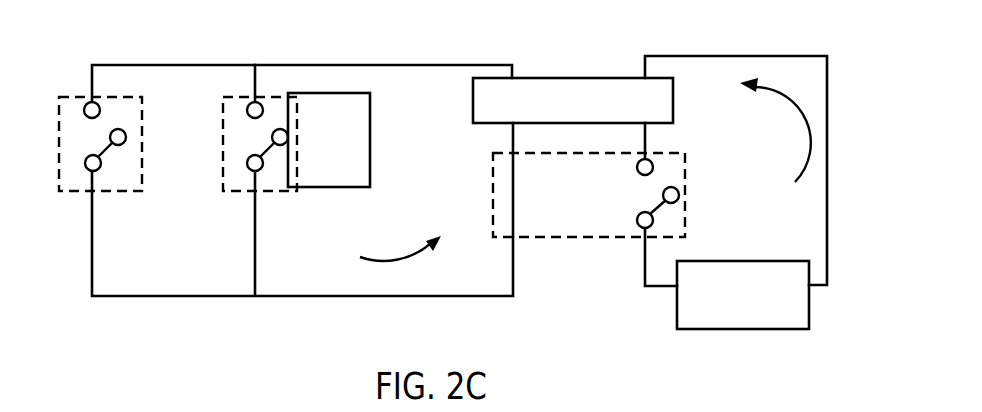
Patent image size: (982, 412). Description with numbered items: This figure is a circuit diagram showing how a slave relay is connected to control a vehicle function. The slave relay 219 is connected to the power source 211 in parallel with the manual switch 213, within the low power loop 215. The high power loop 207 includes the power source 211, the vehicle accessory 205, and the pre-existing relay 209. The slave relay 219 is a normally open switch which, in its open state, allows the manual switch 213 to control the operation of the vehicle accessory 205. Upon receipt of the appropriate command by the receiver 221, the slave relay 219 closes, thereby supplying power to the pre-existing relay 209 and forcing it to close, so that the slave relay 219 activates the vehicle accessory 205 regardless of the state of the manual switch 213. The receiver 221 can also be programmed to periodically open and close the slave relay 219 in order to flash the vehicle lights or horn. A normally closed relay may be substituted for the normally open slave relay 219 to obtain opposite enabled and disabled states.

The vehicle accessory 205 is at (693, 330).
The high power loop 207 is at (767, 82).
The pre-existing relay 209 is at (572, 238).
The power source 211 is at (570, 74).
The manual switch 213 is at (130, 192).
The low power loop 215 is at (398, 260).
The slave relay 219 is at (287, 192).
The receiver 221 is at (333, 93).